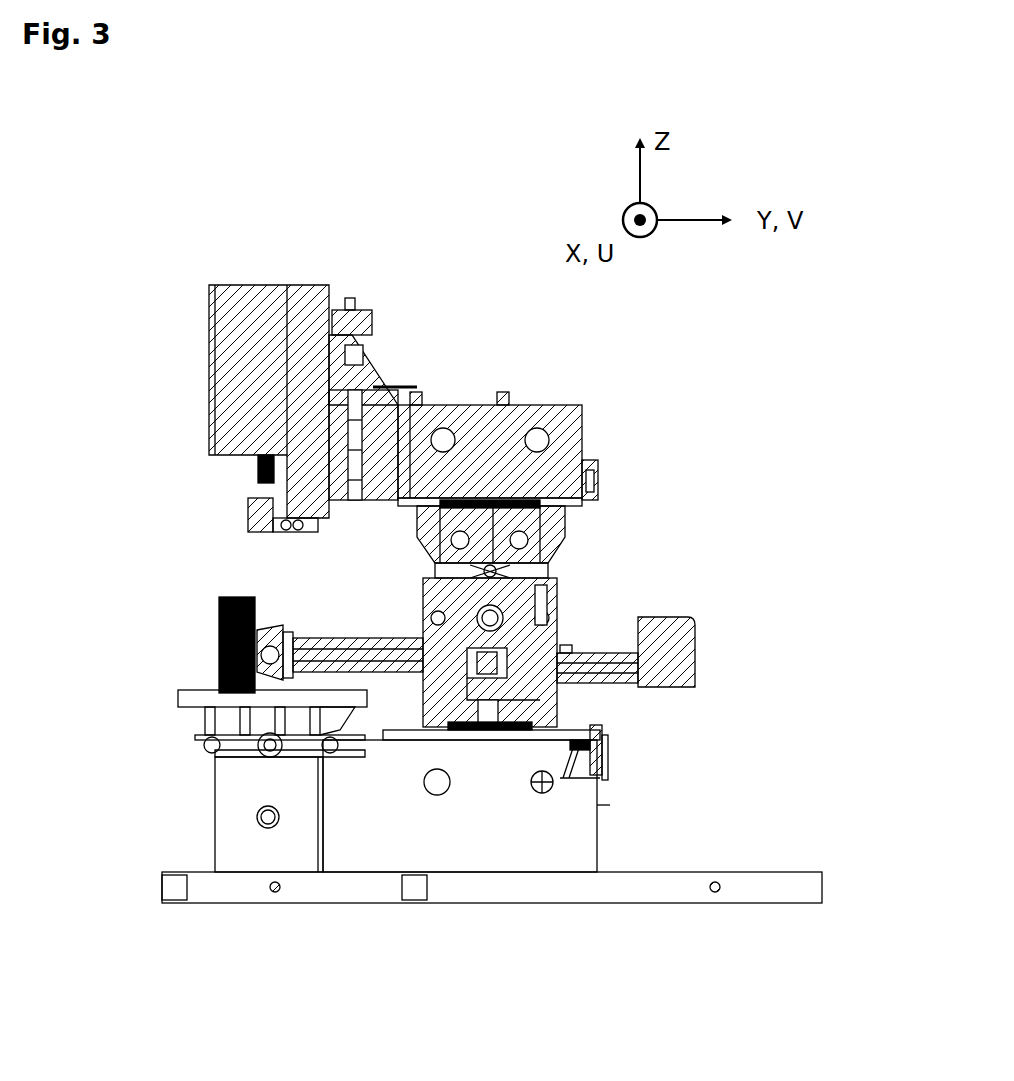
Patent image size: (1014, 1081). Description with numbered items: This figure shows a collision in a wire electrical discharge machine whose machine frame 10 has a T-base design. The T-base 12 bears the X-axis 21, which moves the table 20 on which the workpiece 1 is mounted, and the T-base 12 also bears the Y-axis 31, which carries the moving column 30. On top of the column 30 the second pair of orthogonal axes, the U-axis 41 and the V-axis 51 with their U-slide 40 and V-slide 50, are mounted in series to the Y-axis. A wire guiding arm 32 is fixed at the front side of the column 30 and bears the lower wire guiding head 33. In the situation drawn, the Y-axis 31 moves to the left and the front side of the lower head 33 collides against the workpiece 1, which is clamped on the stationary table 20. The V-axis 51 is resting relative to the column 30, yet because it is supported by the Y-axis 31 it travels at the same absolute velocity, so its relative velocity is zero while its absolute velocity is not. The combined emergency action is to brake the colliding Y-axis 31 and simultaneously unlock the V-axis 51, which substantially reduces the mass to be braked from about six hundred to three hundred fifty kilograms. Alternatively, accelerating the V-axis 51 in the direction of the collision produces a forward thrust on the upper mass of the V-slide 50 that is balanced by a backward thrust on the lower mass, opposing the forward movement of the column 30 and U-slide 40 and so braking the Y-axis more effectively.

The machine frame 10 is at (186, 216).
The workpiece 1 is at (222, 637).
The T-base 12 is at (562, 820).
The table 20 is at (203, 705).
The X-axis 21 is at (300, 722).
The column 30 is at (557, 597).
The Y-axis 31 is at (613, 738).
The wire guiding arm 32 is at (335, 640).
The lower wire guiding head 33 is at (268, 630).
The U-slide 40 is at (557, 550).
The U-axis 41 is at (555, 612).
The V-slide 50 is at (560, 427).
The V-axis 51 is at (600, 493).